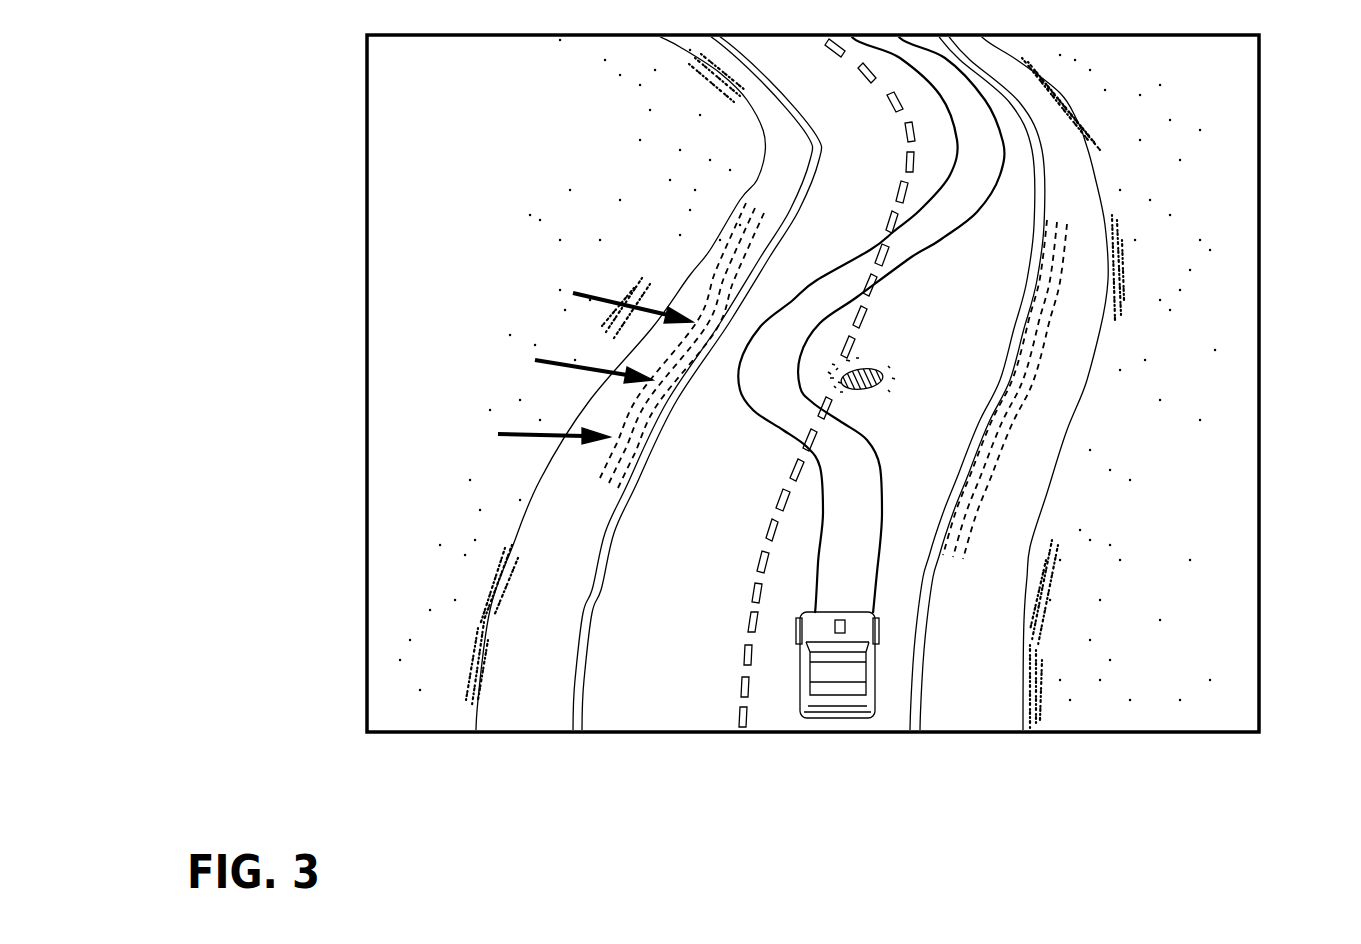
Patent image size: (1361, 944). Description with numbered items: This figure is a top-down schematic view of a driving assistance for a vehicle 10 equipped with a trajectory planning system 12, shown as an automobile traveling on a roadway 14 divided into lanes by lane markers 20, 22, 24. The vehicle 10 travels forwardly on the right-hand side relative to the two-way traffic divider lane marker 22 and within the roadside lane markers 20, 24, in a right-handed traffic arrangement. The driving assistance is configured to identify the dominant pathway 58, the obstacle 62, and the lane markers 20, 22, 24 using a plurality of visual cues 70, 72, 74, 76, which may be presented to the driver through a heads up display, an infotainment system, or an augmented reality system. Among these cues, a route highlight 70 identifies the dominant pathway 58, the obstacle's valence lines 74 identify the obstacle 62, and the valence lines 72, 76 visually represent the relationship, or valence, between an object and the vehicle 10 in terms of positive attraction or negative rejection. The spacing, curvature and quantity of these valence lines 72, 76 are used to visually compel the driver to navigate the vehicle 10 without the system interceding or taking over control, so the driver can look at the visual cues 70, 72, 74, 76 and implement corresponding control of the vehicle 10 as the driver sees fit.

The vehicle 10 is at (838, 710).
The trajectory planning system 12 is at (835, 630).
The roadway 14 is at (913, 553).
The roadside lane marker 20 is at (920, 657).
The two-way traffic divider lane marker 22 is at (742, 687).
The roadside lane marker 24 is at (575, 698).
The dominant pathway 58 is at (818, 322).
The obstacle 62 is at (877, 368).
The route highlight 70 is at (877, 583).
The valence lines 72 is at (1057, 312).
The obstacle's valence lines 74 is at (885, 393).
The valence lines 76 is at (598, 459).